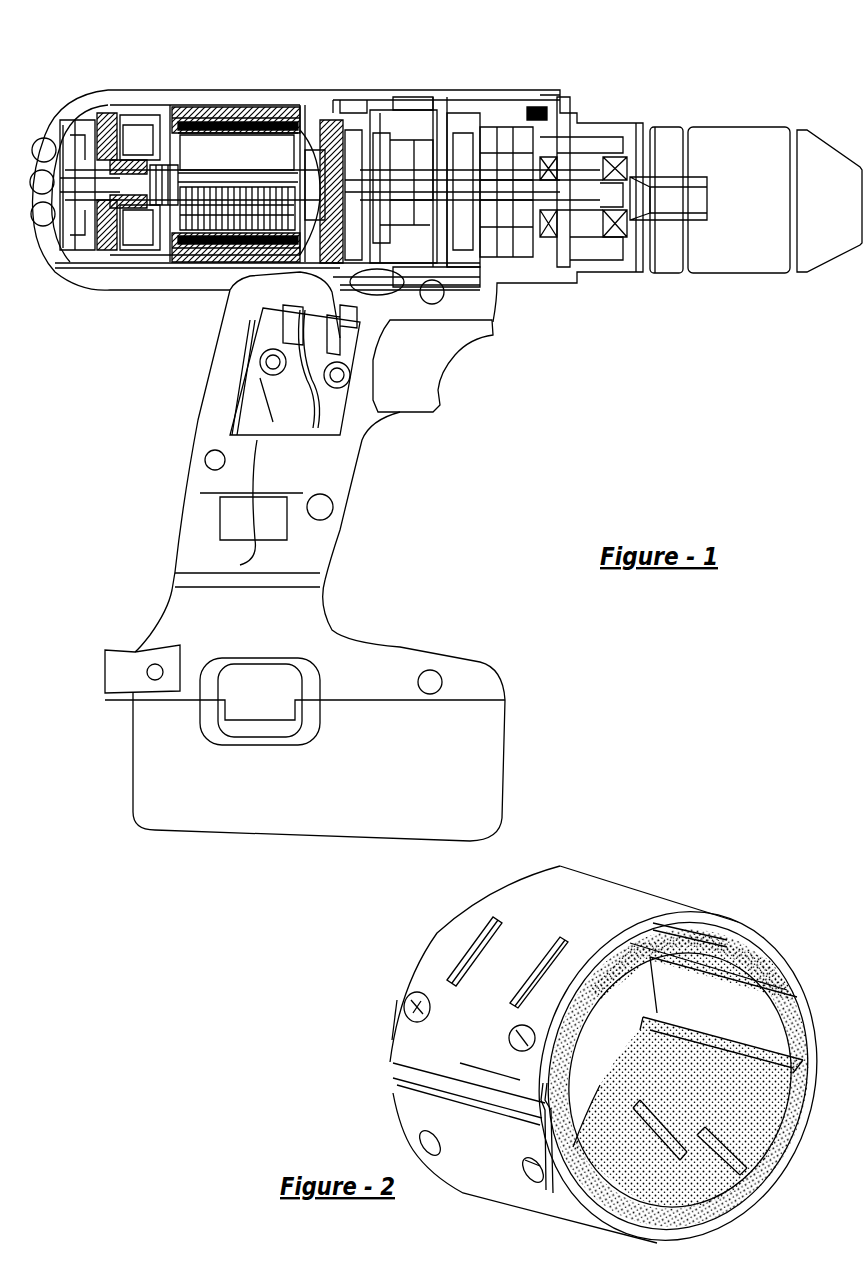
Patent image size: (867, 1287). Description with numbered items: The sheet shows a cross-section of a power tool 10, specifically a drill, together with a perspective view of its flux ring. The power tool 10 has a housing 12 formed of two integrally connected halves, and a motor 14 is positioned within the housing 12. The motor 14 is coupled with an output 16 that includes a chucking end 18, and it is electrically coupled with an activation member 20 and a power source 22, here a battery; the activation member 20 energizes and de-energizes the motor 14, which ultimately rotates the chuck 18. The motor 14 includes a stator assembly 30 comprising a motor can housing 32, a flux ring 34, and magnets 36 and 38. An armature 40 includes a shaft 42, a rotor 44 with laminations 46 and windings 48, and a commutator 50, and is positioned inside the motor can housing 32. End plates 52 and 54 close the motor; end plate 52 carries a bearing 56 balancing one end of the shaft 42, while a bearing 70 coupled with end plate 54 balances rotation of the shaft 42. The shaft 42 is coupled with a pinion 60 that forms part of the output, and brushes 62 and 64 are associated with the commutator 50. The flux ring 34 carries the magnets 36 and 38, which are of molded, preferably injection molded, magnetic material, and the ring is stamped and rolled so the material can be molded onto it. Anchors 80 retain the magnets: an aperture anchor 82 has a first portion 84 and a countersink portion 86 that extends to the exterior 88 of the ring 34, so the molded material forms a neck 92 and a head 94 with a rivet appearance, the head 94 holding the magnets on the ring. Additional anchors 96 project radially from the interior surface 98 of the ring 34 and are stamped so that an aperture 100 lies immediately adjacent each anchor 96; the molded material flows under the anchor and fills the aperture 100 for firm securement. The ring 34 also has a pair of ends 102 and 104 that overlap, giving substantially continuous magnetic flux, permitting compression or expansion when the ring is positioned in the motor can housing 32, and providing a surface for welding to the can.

In FIG. 1, the power tool 10 is at (637, 333).
In FIG. 1, the housing 12 is at (312, 540).
In FIG. 1, the motor 14 is at (192, 95).
In FIG. 1, the output 16 is at (560, 98).
In FIG. 1, the chucking end 18 is at (723, 110).
In FIG. 1, the activation member 20 is at (485, 370).
In FIG. 1, the power source 22 is at (505, 762).
In FIG. 1, the stator assembly 30 is at (300, 103).
In FIG. 1, the motor can housing 32 is at (143, 116).
In FIG. 1, the flux ring 34 is at (165, 105).
In FIG. 2, the flux ring 34 is at (590, 888).
In FIG. 1, the magnet 36 is at (247, 110).
In FIG. 1, the magnet 38 is at (205, 222).
In FIG. 2, the magnet 38 is at (705, 1212).
In FIG. 1, the armature 40 is at (130, 230).
In FIG. 1, the shaft 42 is at (330, 135).
In FIG. 1, the rotor 44 is at (172, 225).
In FIG. 1, the laminations 46 is at (228, 222).
In FIG. 1, the windings 48 is at (253, 222).
In FIG. 1, the commutator 50 is at (108, 166).
In FIG. 1, the end plate 52 is at (330, 150).
In FIG. 1, the end plate 54 is at (112, 166).
In FIG. 1, the bearing 56 is at (270, 225).
In FIG. 1, the pinion 60 is at (460, 135).
In FIG. 1, the brush 62 is at (102, 160).
In FIG. 1, the brush 64 is at (80, 240).
In FIG. 1, the bearing 70 is at (45, 245).
In FIG. 2, the anchors 80 is at (458, 938).
In FIG. 2, the aperture anchor 82 is at (408, 1022).
In FIG. 2, the first portion 84 is at (510, 1037).
In FIG. 2, the countersink portion 86 is at (411, 995).
In FIG. 2, the exterior 88 is at (538, 905).
In FIG. 2, the neck 92 is at (543, 1177).
In FIG. 2, the head 94 is at (522, 1160).
In FIG. 2, the projecting anchors 96 is at (745, 1145).
In FIG. 2, the interior surface 98 is at (760, 1028).
In FIG. 2, the aperture 100 is at (565, 937).
In FIG. 2, the end 102 is at (537, 1090).
In FIG. 2, the end 104 is at (560, 1103).